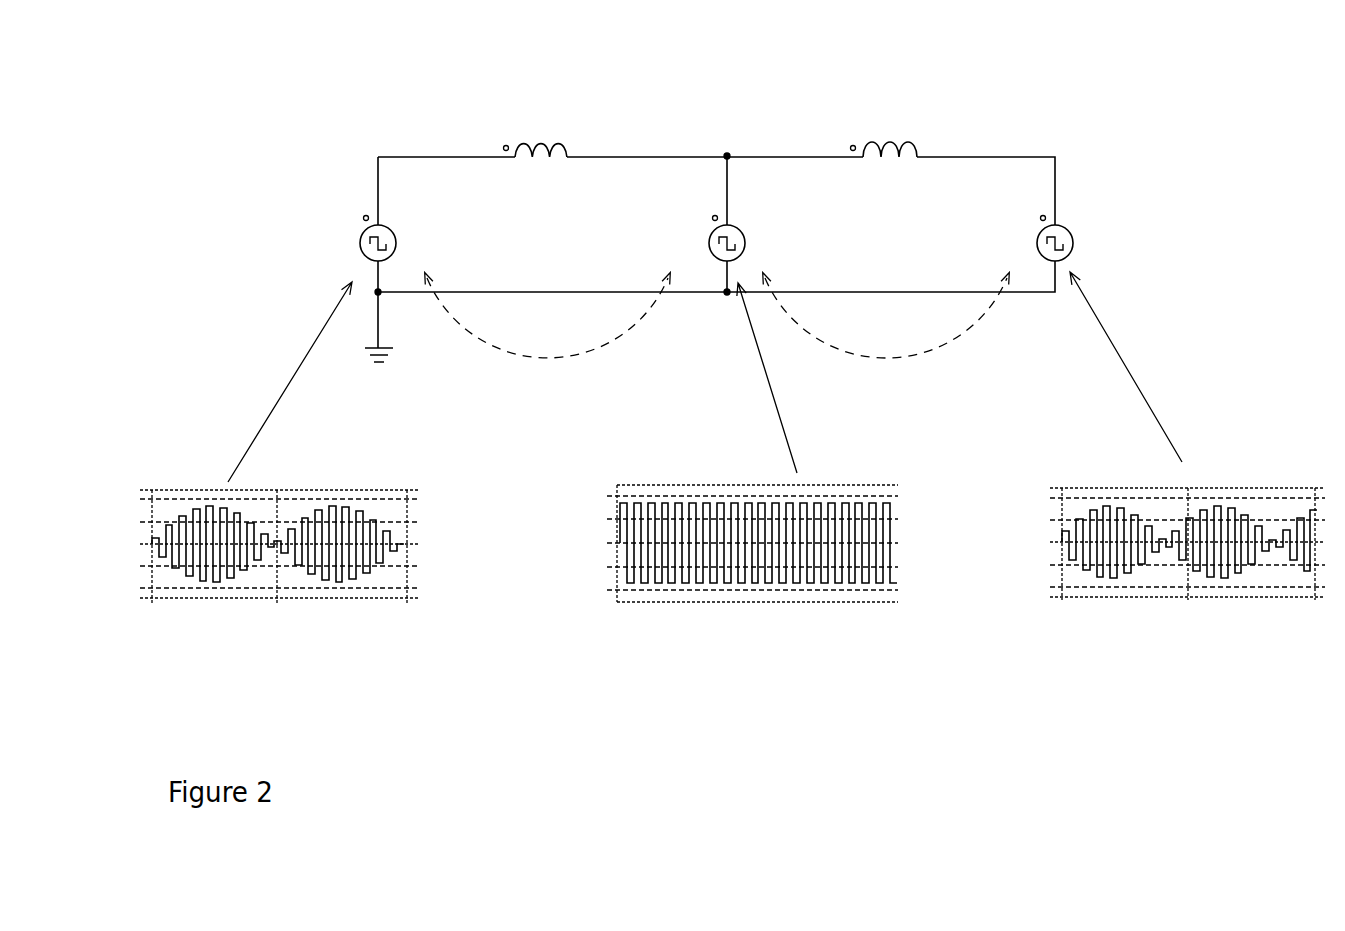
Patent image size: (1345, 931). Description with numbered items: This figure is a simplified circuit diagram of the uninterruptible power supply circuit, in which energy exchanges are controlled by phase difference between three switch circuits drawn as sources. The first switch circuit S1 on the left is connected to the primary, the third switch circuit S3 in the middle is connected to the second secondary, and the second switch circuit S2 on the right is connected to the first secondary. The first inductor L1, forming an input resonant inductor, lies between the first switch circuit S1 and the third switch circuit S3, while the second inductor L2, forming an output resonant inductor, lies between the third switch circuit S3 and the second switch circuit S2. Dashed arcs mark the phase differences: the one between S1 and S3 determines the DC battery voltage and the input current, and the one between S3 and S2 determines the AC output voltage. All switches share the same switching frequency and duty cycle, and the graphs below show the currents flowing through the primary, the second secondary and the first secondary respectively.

The first switch circuit S1 is at (349, 239).
The second switch circuit S2 is at (1026, 239).
The third switch circuit S3 is at (698, 239).
The first inductor L1 is at (531, 142).
The second inductor L2 is at (881, 142).